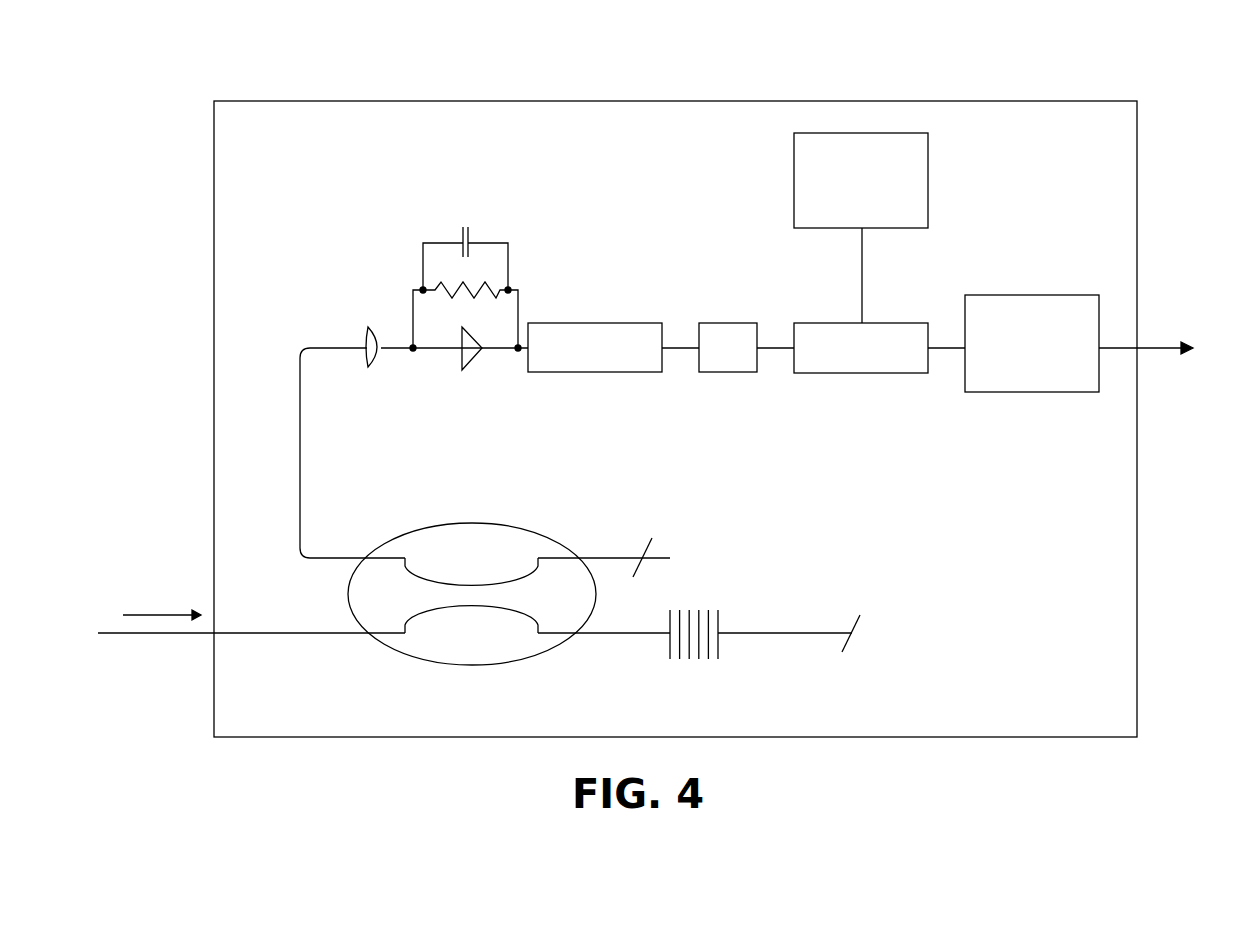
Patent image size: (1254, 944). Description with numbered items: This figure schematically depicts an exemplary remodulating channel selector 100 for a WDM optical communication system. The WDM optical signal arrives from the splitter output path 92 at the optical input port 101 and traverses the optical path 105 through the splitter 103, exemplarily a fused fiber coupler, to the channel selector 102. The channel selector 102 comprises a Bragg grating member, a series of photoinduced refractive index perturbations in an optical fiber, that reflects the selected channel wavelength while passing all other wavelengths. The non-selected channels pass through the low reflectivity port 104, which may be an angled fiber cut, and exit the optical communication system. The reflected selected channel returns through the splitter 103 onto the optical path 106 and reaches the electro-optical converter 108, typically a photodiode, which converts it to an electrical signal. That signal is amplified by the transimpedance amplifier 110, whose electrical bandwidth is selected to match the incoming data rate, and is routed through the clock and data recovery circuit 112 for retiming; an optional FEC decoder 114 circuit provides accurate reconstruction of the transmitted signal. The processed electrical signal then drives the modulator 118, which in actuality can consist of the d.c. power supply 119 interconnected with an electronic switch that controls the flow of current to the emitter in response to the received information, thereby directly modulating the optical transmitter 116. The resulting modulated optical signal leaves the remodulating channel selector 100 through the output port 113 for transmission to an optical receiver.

The remodulating channel selector 100 is at (548, 101).
The splitter output path 92 is at (183, 633).
The optical input port 101 is at (216, 633).
The optical path 105 is at (300, 633).
The splitter 103 is at (500, 523).
The optical path 106 is at (300, 518).
The electro-optical converter 108 is at (372, 327).
The transimpedance amplifier 110 is at (462, 356).
The clock and data recovery circuit 112 is at (602, 323).
The FEC decoder 114 is at (722, 323).
The modulator 118 is at (895, 323).
The d.c. power supply 119 is at (928, 188).
The optical transmitter 116 is at (1028, 295).
The output port 113 is at (1148, 348).
The channel selector 102 is at (708, 610).
The low reflectivity port 104 is at (856, 620).